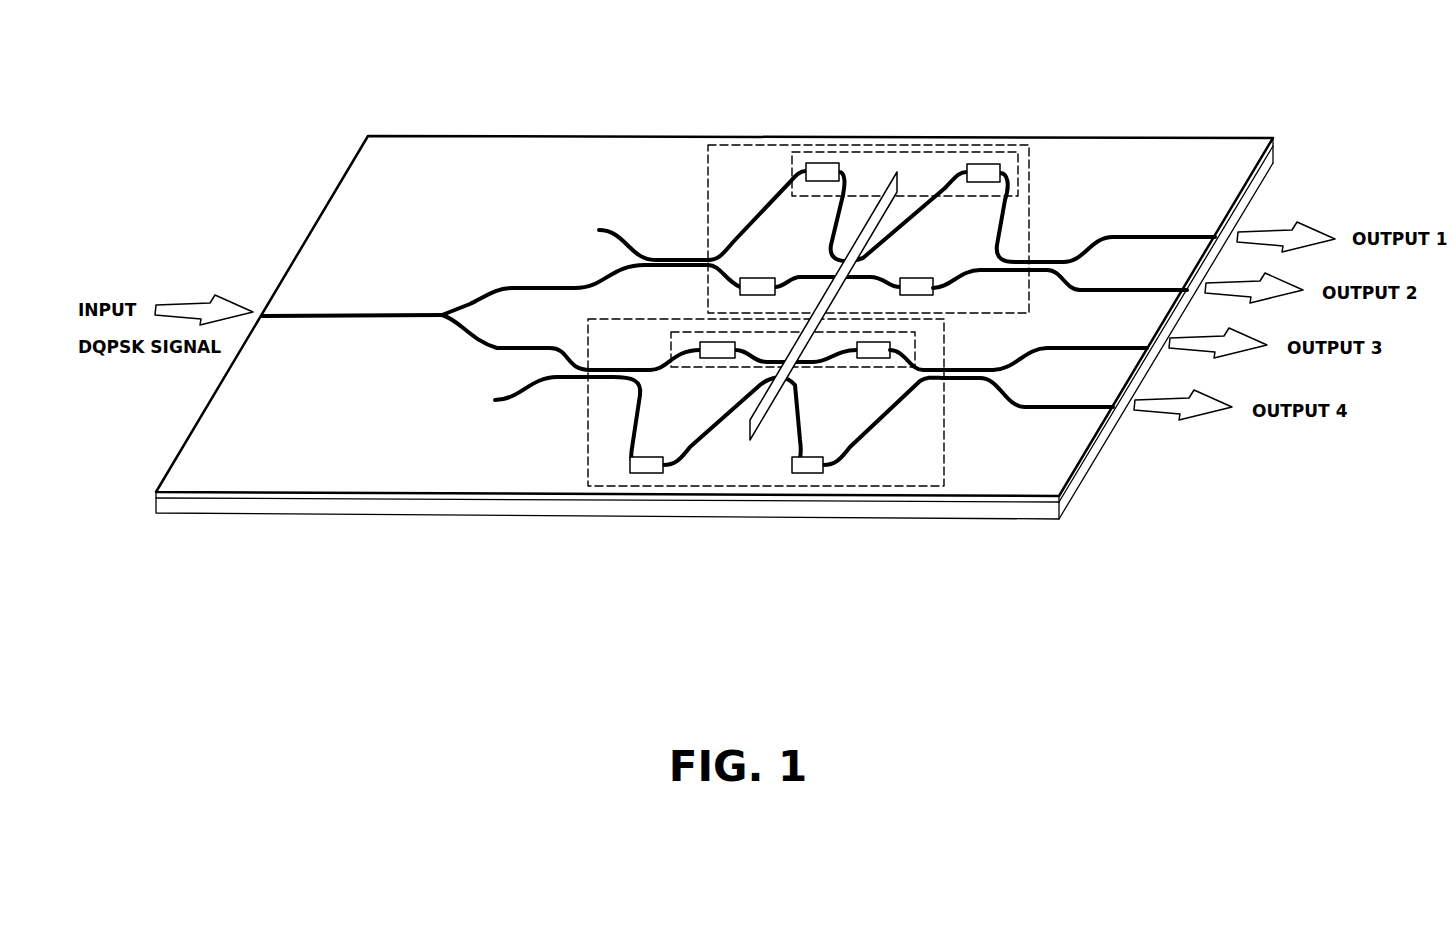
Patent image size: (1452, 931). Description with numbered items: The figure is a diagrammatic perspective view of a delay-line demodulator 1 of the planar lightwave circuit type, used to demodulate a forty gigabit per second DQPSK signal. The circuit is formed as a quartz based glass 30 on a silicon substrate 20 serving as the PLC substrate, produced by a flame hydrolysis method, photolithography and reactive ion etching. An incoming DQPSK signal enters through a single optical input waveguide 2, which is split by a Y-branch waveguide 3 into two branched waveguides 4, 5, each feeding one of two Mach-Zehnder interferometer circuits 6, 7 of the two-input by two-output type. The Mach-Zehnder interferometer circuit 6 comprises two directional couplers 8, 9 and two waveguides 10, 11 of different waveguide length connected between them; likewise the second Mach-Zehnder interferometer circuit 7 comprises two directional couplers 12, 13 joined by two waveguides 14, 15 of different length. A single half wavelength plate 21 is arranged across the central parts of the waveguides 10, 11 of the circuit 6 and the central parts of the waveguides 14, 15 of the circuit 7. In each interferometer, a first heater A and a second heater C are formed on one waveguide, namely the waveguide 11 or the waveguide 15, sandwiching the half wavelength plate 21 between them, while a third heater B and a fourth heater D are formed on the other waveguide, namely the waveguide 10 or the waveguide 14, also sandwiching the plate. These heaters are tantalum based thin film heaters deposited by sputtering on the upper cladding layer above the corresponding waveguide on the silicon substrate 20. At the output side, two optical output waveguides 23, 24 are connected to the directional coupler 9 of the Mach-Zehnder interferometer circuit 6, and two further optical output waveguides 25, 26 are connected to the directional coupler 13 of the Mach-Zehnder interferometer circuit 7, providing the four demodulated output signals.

The delay-line demodulator 1 is at (636, 88).
The optical input waveguide 2 is at (318, 312).
The Y-branch waveguide 3 is at (438, 320).
The branched waveguide 4 is at (528, 286).
The branched waveguide 5 is at (498, 358).
The Mach-Zehnder interferometer circuit 6 is at (866, 206).
The second Mach-Zehnder interferometer circuit 7 is at (746, 402).
The directional coupler 8 is at (668, 258).
The directional coupler 9 is at (1048, 258).
The waveguide 10 is at (718, 279).
The waveguide 11 is at (720, 246).
The directional coupler 12 is at (613, 379).
The directional coupler 13 is at (965, 380).
The waveguide 14 is at (652, 360).
The waveguide 15 is at (697, 445).
The silicon substrate 20 is at (968, 510).
The half wavelength plate 21 is at (876, 163).
The optical output waveguide 23 is at (1160, 235).
The optical output waveguide 24 is at (1135, 288).
The optical output waveguide 25 is at (1108, 345).
The optical output waveguide 26 is at (1085, 405).
The quartz based glass 30 is at (1038, 500).